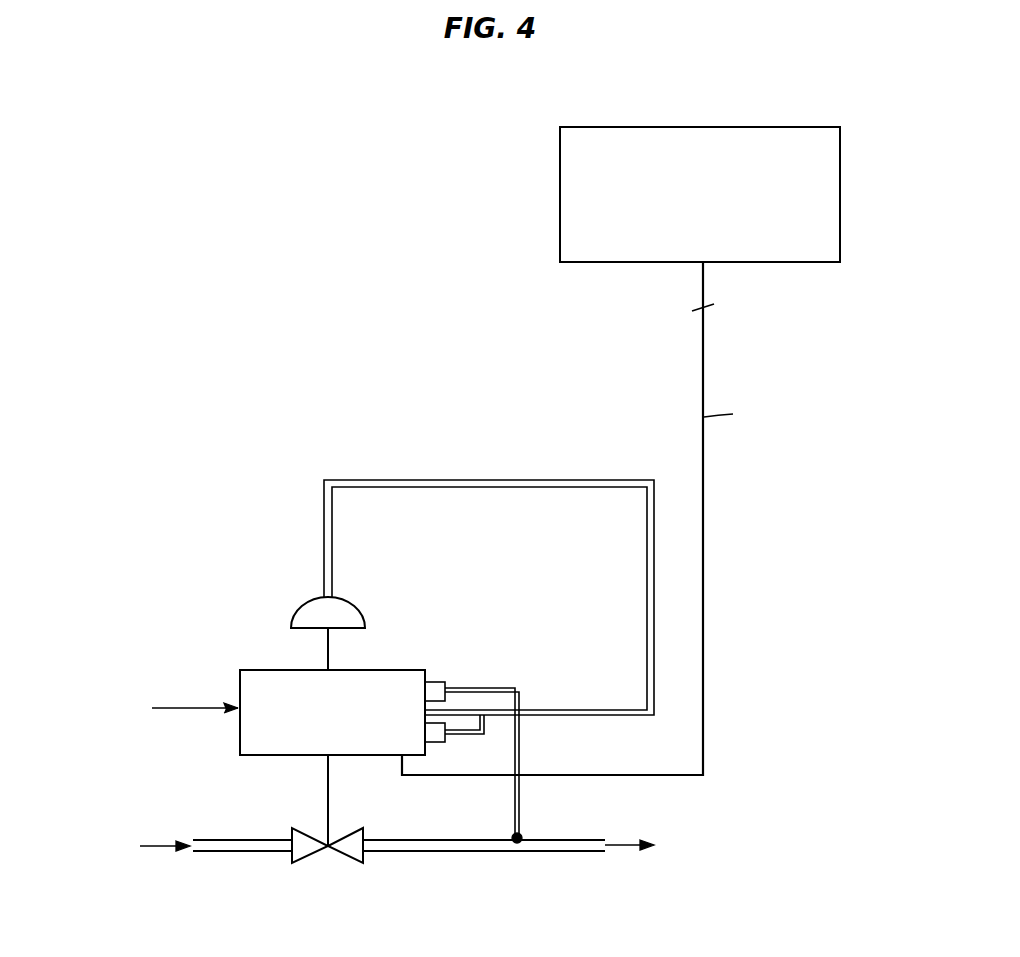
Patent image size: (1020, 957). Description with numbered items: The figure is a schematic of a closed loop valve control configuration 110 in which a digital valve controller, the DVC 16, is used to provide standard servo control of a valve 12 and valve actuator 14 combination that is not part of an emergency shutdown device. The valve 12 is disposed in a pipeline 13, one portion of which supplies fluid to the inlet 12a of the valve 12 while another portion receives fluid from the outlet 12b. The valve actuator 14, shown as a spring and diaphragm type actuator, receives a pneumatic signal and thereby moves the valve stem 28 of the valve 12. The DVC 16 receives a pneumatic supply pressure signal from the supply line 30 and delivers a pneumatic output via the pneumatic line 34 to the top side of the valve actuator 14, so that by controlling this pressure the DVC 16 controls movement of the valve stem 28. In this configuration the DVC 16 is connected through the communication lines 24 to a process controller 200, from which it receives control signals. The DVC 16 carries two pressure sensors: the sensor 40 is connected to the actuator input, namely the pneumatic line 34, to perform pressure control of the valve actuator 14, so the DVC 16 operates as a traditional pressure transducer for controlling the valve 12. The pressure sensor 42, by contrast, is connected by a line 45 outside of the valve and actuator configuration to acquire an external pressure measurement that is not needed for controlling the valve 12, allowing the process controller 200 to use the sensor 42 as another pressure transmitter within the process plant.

The closed loop valve control configuration 110 is at (309, 235).
The process controller 200 is at (840, 190).
The communication lines 24 is at (704, 339).
The pneumatic line 34 is at (647, 613).
The valve actuator 14 is at (306, 606).
The digital valve controller (DVC) 16 is at (274, 669).
The supply line 30 is at (192, 705).
The pressure sensor 42 is at (431, 680).
The pressure sensor 40 is at (432, 744).
The line 45 is at (521, 757).
The valve stem 28 is at (330, 790).
The valve 12 is at (333, 851).
The inlet 12a is at (300, 851).
The outlet 12b is at (366, 851).
The pipeline 13 is at (220, 850).